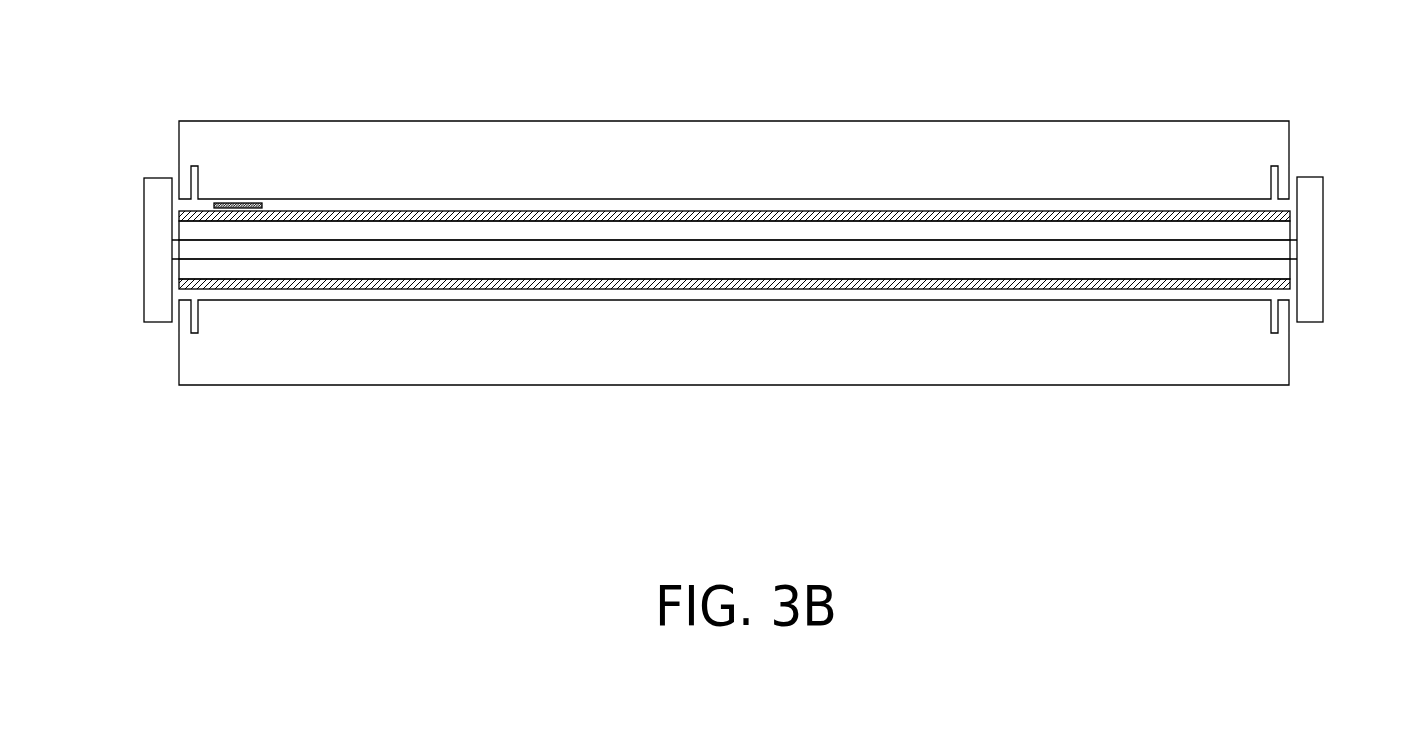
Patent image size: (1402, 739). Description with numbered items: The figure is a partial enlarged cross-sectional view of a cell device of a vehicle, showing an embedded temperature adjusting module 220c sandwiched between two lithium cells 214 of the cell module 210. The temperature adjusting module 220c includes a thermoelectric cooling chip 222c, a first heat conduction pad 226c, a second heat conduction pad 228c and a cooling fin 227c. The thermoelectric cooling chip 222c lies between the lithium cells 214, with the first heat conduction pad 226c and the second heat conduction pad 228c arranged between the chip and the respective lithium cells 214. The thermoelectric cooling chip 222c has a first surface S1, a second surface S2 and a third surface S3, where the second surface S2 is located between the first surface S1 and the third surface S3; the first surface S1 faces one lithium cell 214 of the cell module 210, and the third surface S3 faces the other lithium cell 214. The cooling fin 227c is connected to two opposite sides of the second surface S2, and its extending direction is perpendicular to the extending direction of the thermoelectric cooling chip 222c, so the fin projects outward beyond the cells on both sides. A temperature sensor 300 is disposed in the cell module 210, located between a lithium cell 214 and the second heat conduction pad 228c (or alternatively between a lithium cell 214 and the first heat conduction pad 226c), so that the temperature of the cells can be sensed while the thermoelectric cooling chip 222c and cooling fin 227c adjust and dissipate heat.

The cell module 210 is at (734, 257).
The lithium cell 214 is at (488, 138).
The temperature adjusting module 220c is at (734, 255).
The thermoelectric cooling chip 222c is at (734, 360).
The first heat conduction pad 226c is at (628, 288).
The cooling fin 227c is at (1335, 132).
The second heat conduction pad 228c is at (642, 212).
The temperature sensor 300 is at (242, 202).
The first surface S1 is at (858, 282).
The second surface S2 is at (907, 243).
The third surface S3 is at (945, 225).